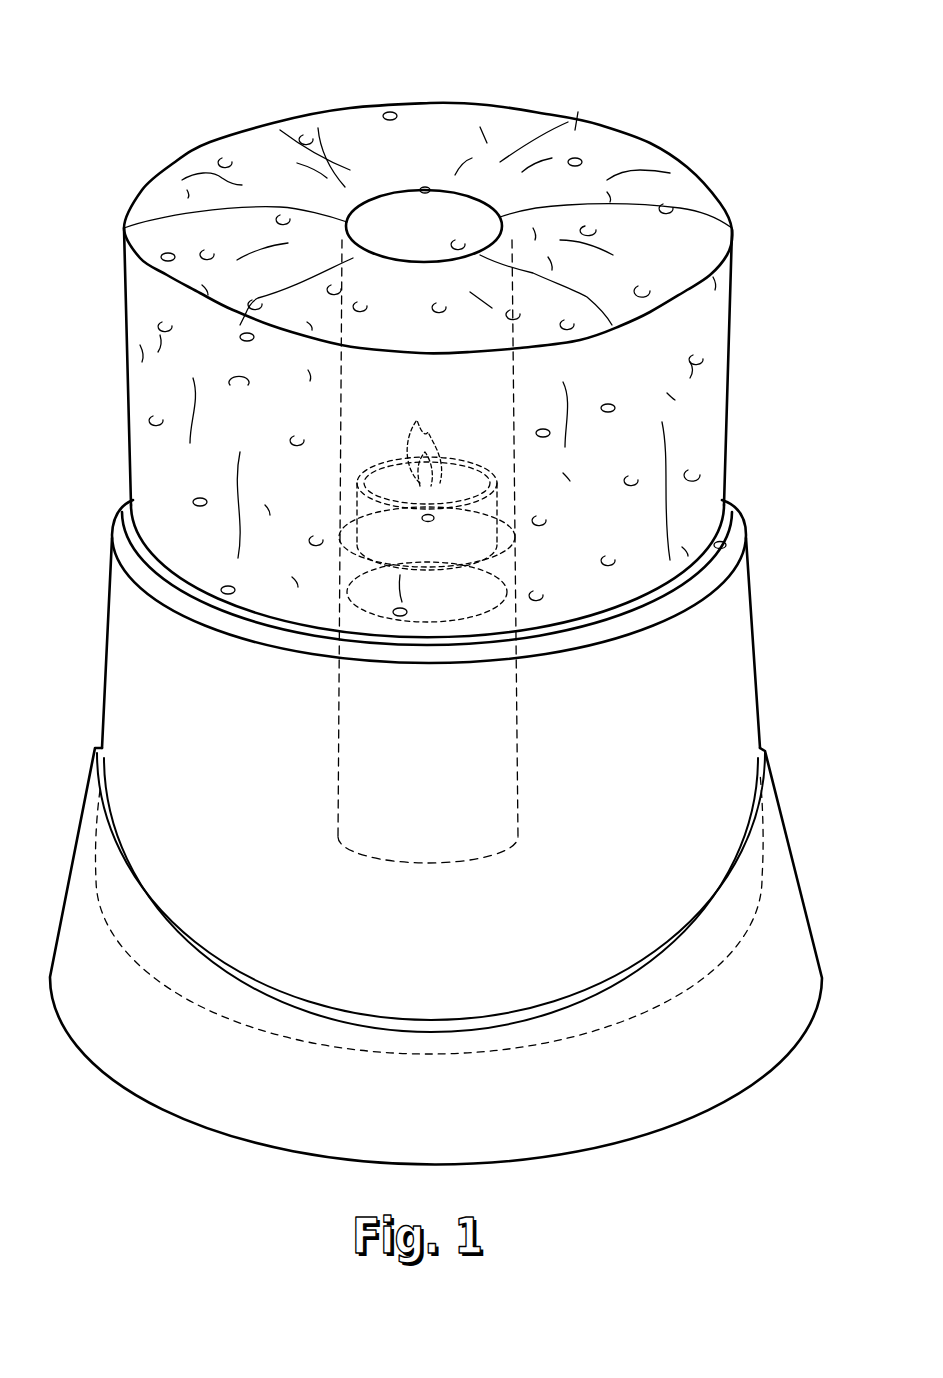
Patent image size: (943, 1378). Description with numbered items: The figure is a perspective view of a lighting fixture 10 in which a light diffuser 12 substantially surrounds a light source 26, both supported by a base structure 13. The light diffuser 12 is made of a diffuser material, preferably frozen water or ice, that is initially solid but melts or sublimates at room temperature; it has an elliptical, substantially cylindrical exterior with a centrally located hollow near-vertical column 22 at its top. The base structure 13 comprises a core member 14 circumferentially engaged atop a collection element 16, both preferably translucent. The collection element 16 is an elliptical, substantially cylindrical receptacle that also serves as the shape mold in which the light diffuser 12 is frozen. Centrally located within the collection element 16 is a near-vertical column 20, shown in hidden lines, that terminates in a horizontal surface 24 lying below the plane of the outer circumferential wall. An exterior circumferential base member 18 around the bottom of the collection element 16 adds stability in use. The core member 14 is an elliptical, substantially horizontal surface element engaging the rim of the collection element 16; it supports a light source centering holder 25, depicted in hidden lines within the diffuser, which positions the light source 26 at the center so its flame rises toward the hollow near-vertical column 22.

The lighting fixture 10 is at (107, 118).
The light diffuser 12 is at (693, 332).
The base structure 13 is at (818, 498).
The core member 14 is at (125, 500).
The collection element 16 is at (433, 956).
The exterior circumferential base member 18 is at (433, 1126).
The near-vertical column 20 is at (517, 730).
The hollow near-vertical column 22 is at (437, 242).
The horizontal surface 24 is at (475, 590).
The light source centering holder 25 is at (357, 497).
The light source 26 is at (448, 482).